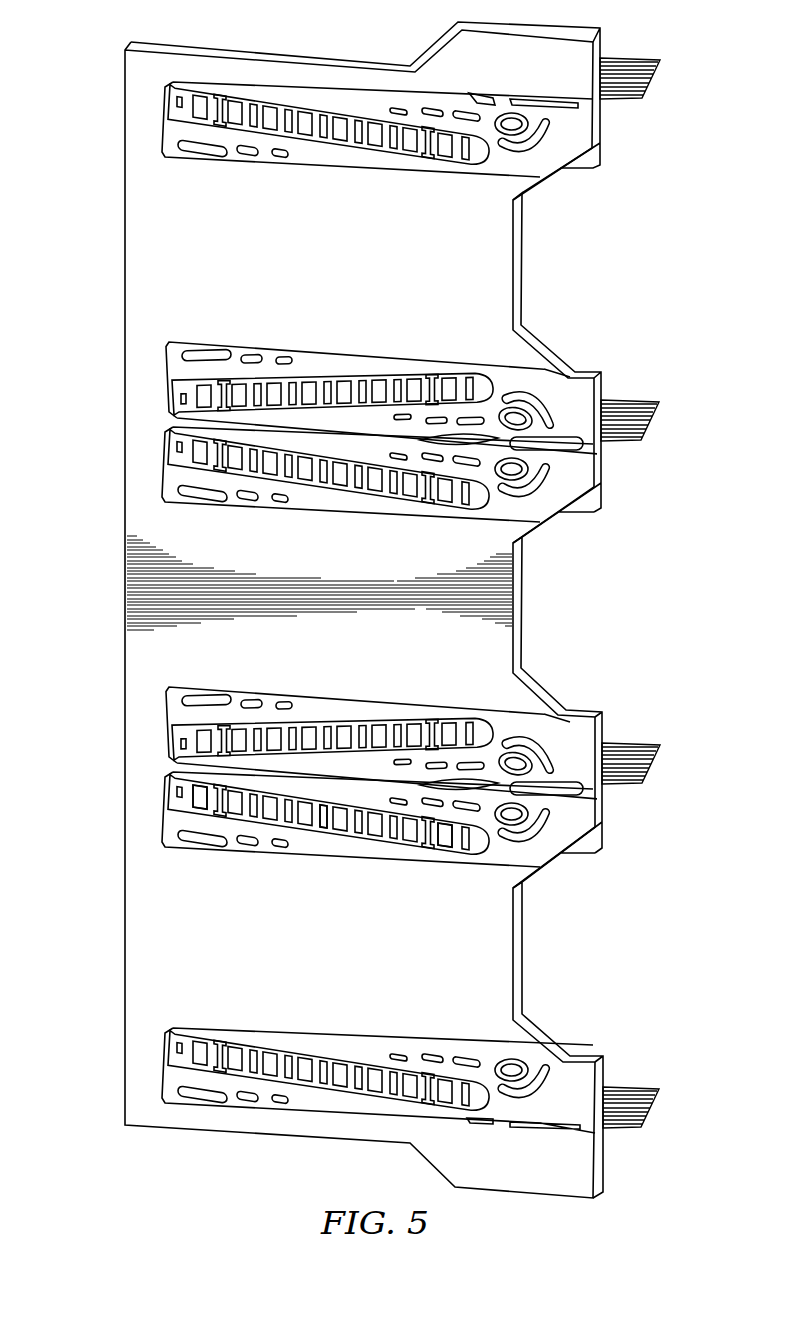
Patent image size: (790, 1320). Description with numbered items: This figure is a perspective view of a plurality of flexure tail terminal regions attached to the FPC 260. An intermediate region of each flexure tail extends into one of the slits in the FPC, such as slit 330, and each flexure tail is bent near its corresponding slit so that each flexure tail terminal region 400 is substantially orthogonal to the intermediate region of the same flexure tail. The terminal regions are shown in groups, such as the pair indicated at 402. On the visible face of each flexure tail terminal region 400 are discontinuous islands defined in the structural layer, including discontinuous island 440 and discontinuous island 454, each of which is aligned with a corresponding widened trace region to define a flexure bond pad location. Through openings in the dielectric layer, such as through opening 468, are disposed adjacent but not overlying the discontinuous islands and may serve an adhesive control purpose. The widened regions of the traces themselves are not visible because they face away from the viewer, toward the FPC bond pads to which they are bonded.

The FPC 260 is at (127, 304).
The slit 330 is at (603, 787).
The flexure tail terminal region 400 is at (379, 605).
The blade pair 402 is at (379, 801).
The discontinuous island 440 is at (200, 800).
The through opening 468 is at (323, 820).
The discontinuous island 454 is at (444, 864).